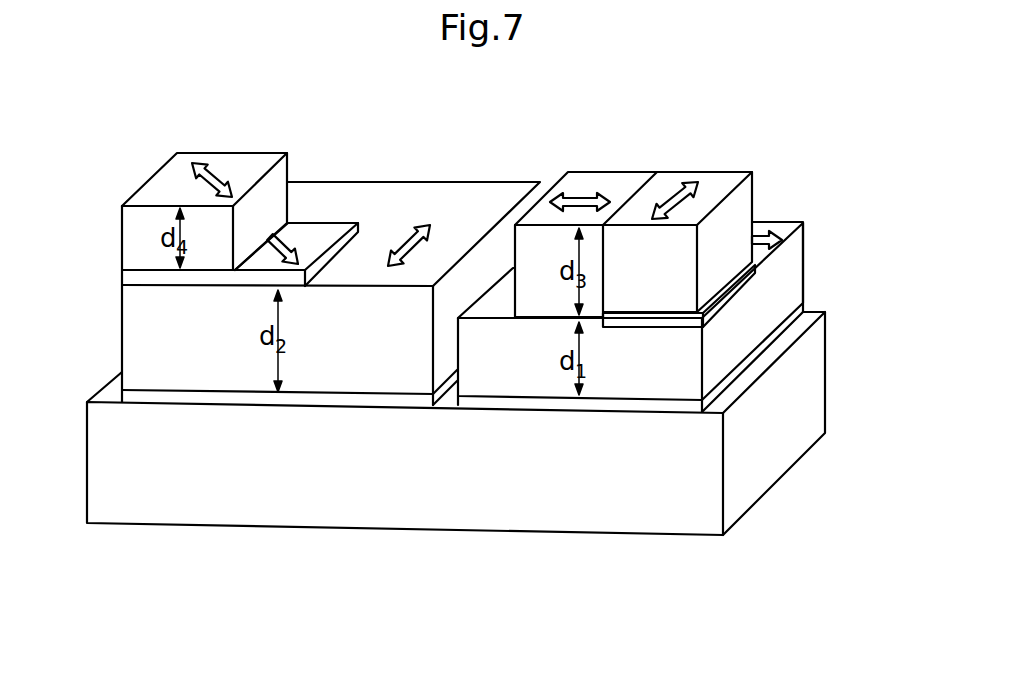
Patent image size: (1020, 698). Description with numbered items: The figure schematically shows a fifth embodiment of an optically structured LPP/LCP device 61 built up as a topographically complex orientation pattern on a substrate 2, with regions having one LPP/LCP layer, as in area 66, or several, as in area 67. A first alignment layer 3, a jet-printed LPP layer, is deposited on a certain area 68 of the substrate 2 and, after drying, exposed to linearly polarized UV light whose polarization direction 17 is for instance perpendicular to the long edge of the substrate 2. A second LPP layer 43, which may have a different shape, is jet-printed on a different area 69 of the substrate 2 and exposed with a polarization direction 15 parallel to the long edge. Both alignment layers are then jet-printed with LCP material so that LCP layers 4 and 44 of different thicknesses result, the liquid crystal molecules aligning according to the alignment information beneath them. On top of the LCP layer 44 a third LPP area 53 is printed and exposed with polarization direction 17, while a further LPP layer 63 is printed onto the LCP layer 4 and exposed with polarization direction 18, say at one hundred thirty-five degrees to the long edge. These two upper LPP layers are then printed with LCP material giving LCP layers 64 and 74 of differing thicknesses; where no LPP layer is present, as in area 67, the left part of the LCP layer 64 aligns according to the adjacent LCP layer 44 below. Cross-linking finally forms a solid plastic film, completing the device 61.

The substrate 2 is at (783, 385).
The first alignment layer 3 is at (165, 397).
The LCP layer 4 is at (167, 345).
The polarization direction 15 is at (777, 233).
The polarization direction 17 is at (426, 226).
The polarization direction 18 is at (292, 262).
The second LPP layer 43 is at (760, 350).
The LCP layer 44 is at (792, 248).
The third LPP area 53 is at (732, 293).
The device 61 is at (437, 540).
The further LPP layer 63 is at (137, 277).
The LCP layer 64 is at (590, 183).
The area 66 is at (391, 160).
The area 67 is at (652, 165).
The area 68 is at (338, 427).
The area 69 is at (538, 432).
The LCP layer 74 is at (137, 237).